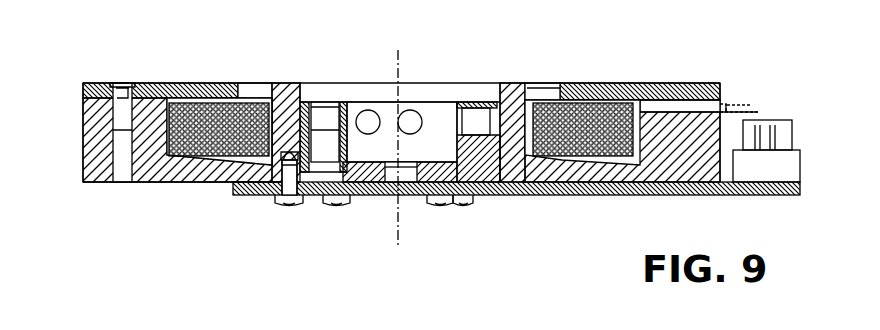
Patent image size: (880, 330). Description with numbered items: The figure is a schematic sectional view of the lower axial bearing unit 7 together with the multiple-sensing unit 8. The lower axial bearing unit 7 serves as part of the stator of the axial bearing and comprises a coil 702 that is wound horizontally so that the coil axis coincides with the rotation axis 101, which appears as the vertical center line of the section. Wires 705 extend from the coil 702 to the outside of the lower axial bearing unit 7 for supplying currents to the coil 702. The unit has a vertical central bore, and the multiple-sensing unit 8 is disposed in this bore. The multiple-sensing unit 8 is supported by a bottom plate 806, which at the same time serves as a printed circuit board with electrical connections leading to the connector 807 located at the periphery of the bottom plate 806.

The lower axial bearing unit 7 is at (686, 63).
The multiple-sensing unit 8 is at (463, 66).
The rotation axis 101 is at (418, 161).
The coil 702 is at (571, 108).
The wires 705 is at (734, 104).
The bottom plate 806 is at (505, 186).
The connector 807 is at (757, 166).